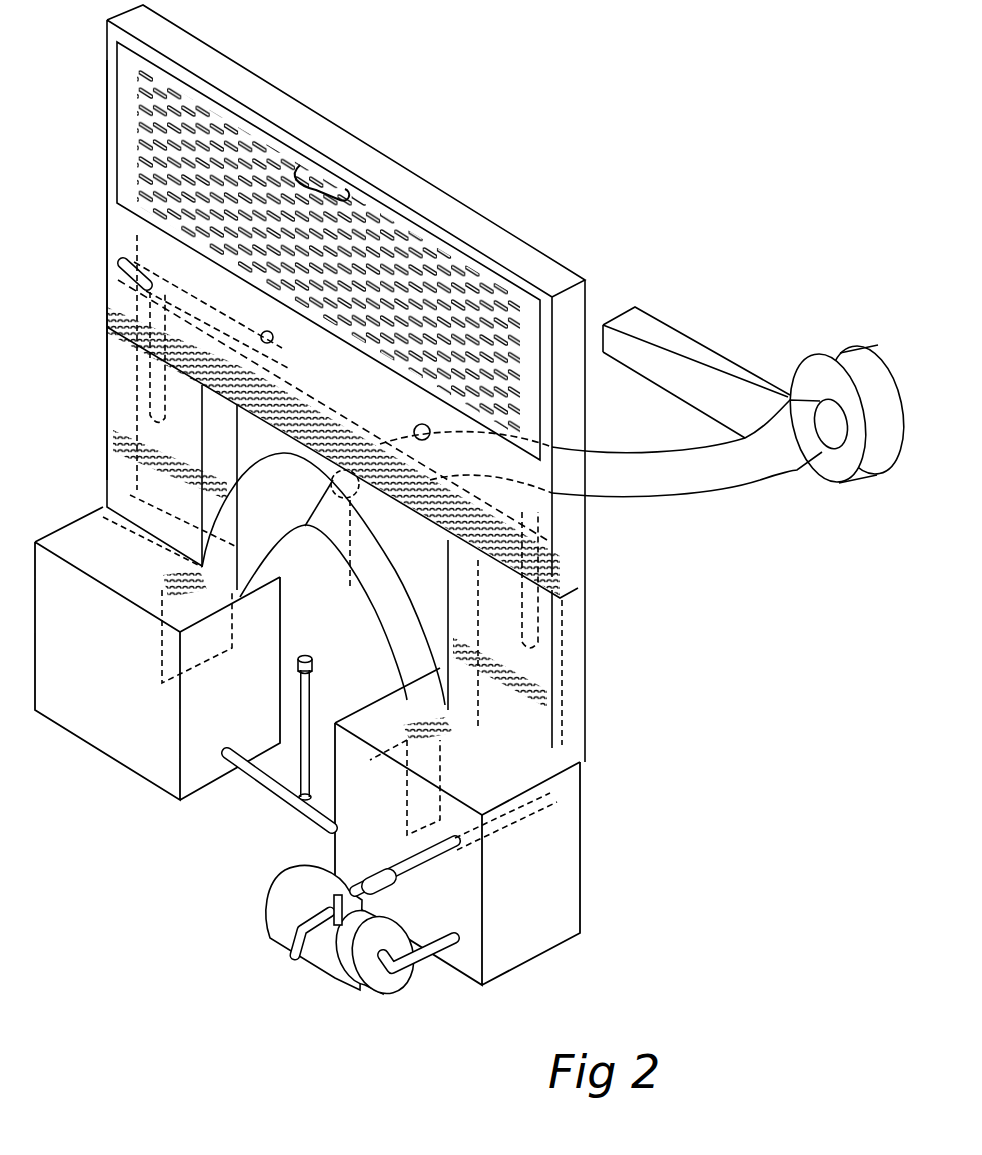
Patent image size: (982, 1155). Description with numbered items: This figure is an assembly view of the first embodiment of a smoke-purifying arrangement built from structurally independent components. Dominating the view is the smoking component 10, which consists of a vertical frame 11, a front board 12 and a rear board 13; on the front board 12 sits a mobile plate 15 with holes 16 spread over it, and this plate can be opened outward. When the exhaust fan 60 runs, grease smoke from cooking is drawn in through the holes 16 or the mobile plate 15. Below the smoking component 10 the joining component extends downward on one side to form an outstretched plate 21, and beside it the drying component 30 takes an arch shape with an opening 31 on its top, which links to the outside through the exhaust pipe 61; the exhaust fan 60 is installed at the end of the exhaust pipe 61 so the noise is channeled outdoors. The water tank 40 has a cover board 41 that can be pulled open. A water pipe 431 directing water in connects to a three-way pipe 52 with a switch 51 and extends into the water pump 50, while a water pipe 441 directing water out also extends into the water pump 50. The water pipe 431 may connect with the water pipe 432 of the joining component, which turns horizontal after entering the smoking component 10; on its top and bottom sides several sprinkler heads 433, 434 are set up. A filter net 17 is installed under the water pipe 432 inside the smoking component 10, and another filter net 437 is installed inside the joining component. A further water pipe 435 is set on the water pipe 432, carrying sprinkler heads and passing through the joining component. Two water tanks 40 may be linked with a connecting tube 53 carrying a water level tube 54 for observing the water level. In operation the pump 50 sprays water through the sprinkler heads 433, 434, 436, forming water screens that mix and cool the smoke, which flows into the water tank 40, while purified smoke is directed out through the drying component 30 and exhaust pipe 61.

The smoking component 10 is at (350, 383).
The vertical frame 11 is at (348, 140).
The front board 12 is at (120, 234).
The rear board 13 is at (587, 415).
The mobile plate 15 is at (130, 135).
The holes 16 is at (260, 147).
The filter net 17 is at (130, 390).
The outstretched plate 21 is at (407, 800).
The drying component 30 is at (304, 545).
The opening 31 is at (352, 548).
The water tank 40 is at (497, 825).
The cover board 41 is at (363, 717).
The water pump 50 is at (323, 983).
The switch 51 is at (334, 912).
The three-way pipe 52 is at (376, 878).
The connecting tube 53 is at (262, 780).
The water level tube 54 is at (300, 712).
The exhaust fan 60 is at (870, 372).
The exhaust pipe 61 is at (728, 480).
The water pipe directing water in 431 is at (413, 870).
The water pipe 432 is at (555, 640).
The sprinkler heads 433 is at (280, 352).
The sprinkler heads 434 is at (110, 318).
The water pipe 435 is at (555, 610).
The sprinkler heads 436 is at (545, 658).
The filter net 437 is at (555, 715).
The water pipe directing water out 441 is at (417, 972).